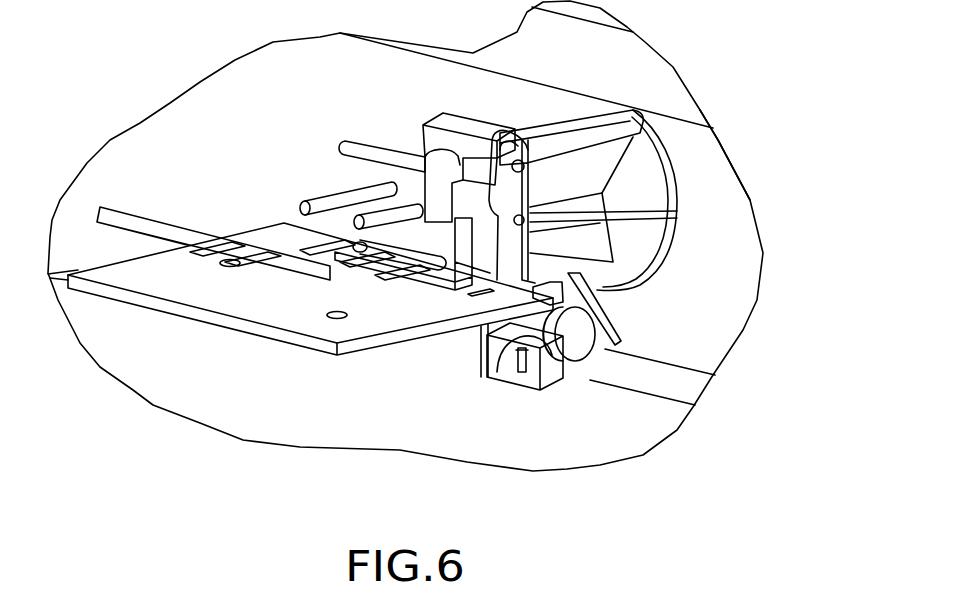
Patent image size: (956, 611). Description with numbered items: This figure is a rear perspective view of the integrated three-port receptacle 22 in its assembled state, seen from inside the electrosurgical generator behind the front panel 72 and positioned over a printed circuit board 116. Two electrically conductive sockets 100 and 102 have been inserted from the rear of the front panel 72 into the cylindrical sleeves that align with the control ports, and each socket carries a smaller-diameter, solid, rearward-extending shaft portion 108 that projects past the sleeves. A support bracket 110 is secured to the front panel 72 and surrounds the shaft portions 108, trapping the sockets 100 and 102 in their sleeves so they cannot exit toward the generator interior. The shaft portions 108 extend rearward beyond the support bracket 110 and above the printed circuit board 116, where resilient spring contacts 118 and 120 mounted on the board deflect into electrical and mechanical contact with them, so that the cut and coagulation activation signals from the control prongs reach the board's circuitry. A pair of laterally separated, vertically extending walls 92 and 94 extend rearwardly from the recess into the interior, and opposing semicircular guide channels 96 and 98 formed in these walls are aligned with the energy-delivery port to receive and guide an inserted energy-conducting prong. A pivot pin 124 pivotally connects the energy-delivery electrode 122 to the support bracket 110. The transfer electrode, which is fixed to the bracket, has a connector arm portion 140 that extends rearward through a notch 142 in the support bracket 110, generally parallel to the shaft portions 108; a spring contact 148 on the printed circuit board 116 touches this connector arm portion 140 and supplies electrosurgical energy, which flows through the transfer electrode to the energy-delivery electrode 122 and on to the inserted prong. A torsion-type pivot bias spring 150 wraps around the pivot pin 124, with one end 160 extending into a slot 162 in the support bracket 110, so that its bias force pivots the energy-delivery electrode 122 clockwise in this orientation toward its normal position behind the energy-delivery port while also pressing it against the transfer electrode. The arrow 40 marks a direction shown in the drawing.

The three-port receptacle 22 is at (440, 390).
The media path 40 is at (645, 306).
The front panel 72 is at (730, 182).
The wall 92 is at (523, 160).
The wall 94 is at (513, 158).
The guide channel 96 is at (540, 200).
The guide channel 98 is at (500, 187).
The electrically conductive socket 100 is at (387, 203).
The electrically conductive socket 102 is at (308, 192).
The shaft portion 108 is at (324, 184).
The support bracket 110 is at (357, 162).
The printed circuit board 116 is at (258, 308).
The spring contact 118 is at (345, 238).
The spring contact 120 is at (300, 207).
The energy-delivery electrode 122 is at (614, 358).
The pivot pin 124 is at (568, 347).
The connector arm portion 140 is at (421, 200).
The notch 142 is at (452, 260).
The spring contact 148 is at (365, 262).
The pivot bias spring 150 is at (475, 338).
The end of pivot bias spring 160 is at (520, 390).
The slot 162 is at (483, 363).